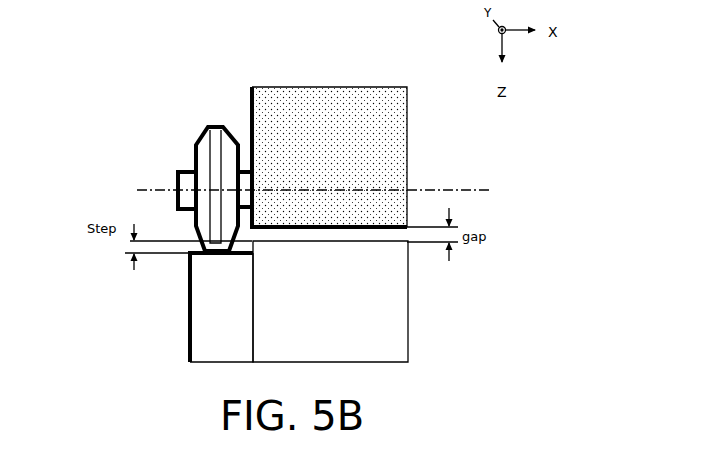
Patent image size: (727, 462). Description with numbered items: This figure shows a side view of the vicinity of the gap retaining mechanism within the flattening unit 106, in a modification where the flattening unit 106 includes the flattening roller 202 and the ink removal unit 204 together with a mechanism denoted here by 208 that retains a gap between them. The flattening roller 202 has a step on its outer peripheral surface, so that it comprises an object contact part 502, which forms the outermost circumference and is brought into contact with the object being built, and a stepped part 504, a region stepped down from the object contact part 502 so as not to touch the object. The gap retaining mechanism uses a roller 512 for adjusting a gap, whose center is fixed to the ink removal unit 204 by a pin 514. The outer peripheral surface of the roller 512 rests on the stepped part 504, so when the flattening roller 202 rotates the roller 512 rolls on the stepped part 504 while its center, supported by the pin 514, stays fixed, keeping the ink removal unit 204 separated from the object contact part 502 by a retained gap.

The flattening unit 106 is at (113, 69).
The probe body 208 is at (177, 128).
The roller for adjusting a gap 512 is at (216, 125).
The pin 514 is at (178, 203).
The ink removal unit 204 is at (407, 138).
The flattening roller 202 is at (347, 301).
The object contact part 502 is at (355, 242).
The stepped part 504 is at (231, 260).